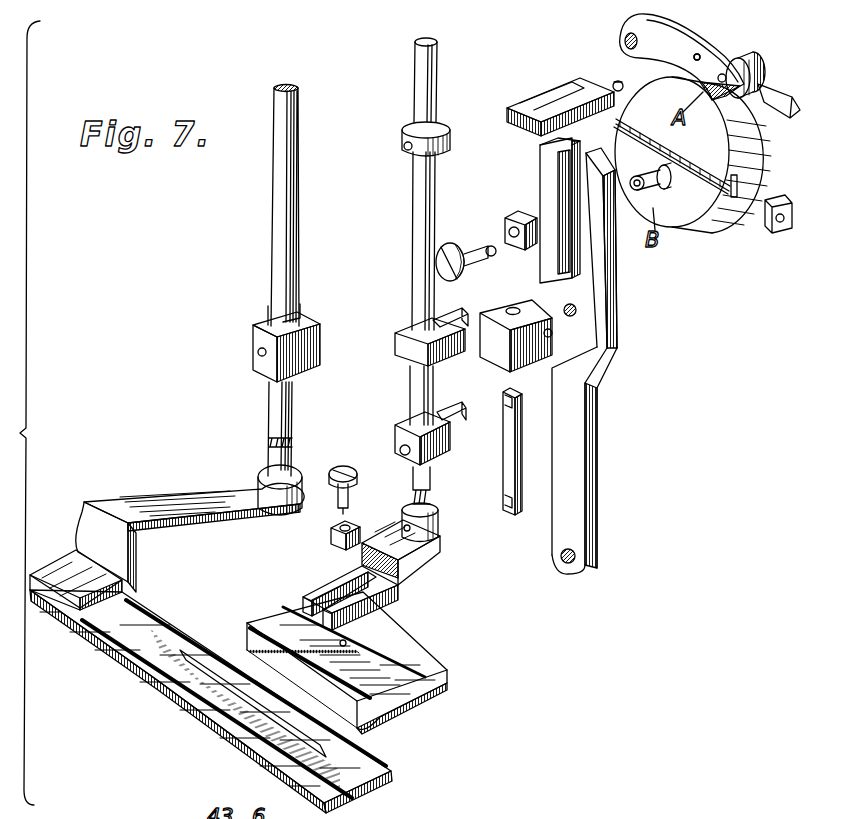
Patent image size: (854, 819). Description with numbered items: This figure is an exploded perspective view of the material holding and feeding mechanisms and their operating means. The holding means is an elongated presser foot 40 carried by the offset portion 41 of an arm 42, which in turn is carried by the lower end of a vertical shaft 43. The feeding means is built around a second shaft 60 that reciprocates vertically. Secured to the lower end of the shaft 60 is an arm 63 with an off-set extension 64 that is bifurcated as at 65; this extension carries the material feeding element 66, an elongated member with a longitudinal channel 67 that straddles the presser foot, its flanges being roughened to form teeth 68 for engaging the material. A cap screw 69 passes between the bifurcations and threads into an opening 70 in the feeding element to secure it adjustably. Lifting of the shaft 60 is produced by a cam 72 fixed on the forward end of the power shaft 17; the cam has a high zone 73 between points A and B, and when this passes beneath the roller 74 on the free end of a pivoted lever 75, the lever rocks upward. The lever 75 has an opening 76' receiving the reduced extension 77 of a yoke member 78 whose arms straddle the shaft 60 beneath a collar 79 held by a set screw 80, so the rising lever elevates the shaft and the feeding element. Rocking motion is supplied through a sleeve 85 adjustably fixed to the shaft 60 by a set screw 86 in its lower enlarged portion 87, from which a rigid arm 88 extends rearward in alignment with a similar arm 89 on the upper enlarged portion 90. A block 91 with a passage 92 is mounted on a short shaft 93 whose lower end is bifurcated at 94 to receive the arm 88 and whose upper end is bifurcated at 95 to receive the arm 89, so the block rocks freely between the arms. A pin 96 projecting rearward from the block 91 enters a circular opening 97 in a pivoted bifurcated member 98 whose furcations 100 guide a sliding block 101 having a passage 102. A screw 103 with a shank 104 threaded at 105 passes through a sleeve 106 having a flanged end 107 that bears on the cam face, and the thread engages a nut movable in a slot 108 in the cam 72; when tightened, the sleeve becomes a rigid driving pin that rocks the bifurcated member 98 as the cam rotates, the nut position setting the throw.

The power shaft 17 is at (770, 100).
The presser foot 40 is at (167, 690).
The offset portion 41 is at (135, 563).
The arm 42 is at (177, 498).
The vertical shaft 43 is at (283, 243).
The shaft 60 is at (423, 185).
The arm 63 is at (405, 548).
The off-set extension 64 is at (392, 583).
The bifurcation 65 is at (333, 583).
The material feeding element 66 is at (407, 670).
The channel 67 is at (407, 703).
The teeth 68 is at (250, 656).
The cap screw 69 is at (358, 480).
The opening 70 is at (347, 643).
The cam 72 is at (690, 222).
The high zone 73 is at (653, 78).
The roller 74 is at (747, 52).
The pivoted lever 75 is at (640, 28).
The opening 76' is at (716, 34).
The reduced extension 77 is at (611, 80).
The yoke member 78 is at (553, 90).
The collar 79 is at (440, 130).
The set screw 80 is at (406, 149).
The sleeve 85 is at (425, 385).
The set screw 86 is at (400, 450).
The enlarged portion 87 is at (438, 450).
The rigid arm 88 is at (450, 417).
The arm 89 is at (460, 313).
The enlarged portion 90 is at (408, 348).
The block 91 is at (497, 352).
The passage 92 is at (513, 308).
The shaft 93 is at (518, 460).
The bifurcated lower end 94 is at (507, 502).
The bifurcated upper end 95 is at (507, 408).
The pin 96 is at (551, 334).
The circular opening 97 is at (568, 305).
The bifurcated member 98 is at (568, 408).
The furcations 100 is at (587, 185).
The block 101 is at (513, 213).
The passage 102 is at (506, 230).
The screw 103 is at (436, 258).
The shank 104 is at (472, 252).
The thread 105 is at (488, 245).
The sleeve 106 is at (643, 187).
The flanged end 107 is at (667, 182).
The slot 108 is at (735, 197).